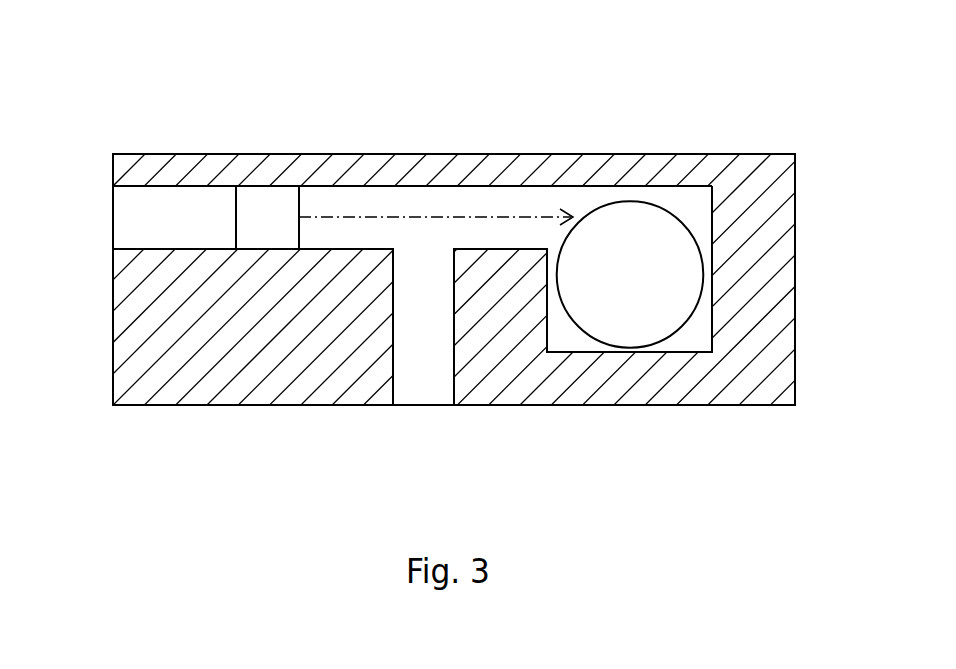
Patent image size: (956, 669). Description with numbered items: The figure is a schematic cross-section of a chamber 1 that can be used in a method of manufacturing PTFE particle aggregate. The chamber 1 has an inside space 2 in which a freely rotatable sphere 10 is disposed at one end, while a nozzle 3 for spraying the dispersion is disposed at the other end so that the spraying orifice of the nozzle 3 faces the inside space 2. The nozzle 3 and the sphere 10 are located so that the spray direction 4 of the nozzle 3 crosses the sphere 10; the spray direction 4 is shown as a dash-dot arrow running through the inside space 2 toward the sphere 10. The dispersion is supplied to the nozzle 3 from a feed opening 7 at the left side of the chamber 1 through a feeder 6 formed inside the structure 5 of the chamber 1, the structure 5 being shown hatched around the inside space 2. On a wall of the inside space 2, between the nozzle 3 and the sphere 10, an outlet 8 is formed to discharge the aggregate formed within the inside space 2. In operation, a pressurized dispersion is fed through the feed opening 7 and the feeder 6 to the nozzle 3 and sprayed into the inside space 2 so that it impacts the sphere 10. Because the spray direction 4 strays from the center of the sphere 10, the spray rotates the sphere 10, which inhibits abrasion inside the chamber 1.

The chamber 1 is at (623, 40).
The inside space 2 is at (495, 198).
The nozzle 3 is at (263, 197).
The spray direction 4 is at (410, 208).
The structure 5 is at (228, 389).
The feeder 6 is at (165, 197).
The feed opening 7 is at (108, 212).
The outlet 8 is at (422, 412).
The sphere 10 is at (638, 233).